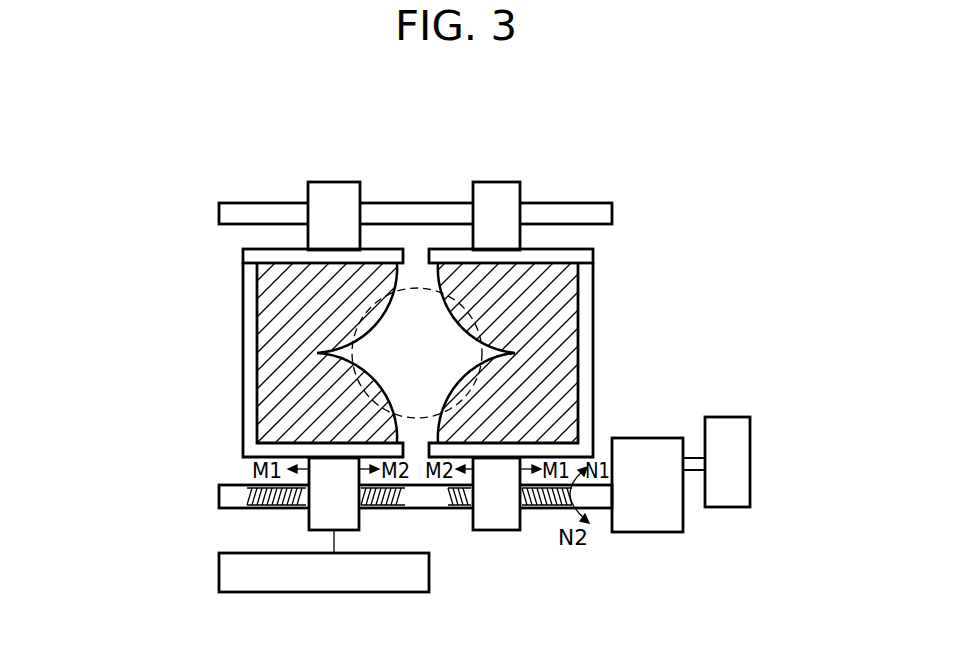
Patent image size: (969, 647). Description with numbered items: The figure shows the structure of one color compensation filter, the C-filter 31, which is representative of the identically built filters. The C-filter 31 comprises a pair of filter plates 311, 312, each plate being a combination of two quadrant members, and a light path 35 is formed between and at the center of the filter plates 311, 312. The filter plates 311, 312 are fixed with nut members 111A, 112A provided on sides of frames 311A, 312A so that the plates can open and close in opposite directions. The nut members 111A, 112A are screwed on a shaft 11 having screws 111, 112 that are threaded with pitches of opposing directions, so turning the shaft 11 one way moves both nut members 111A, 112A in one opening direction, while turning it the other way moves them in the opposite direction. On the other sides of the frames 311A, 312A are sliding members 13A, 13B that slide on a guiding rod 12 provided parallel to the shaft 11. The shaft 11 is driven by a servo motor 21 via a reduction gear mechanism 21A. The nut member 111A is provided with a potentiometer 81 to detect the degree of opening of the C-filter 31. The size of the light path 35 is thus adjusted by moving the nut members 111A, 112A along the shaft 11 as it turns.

The shaft 11 is at (442, 560).
The guiding rod 12 is at (585, 203).
The sliding member 13A is at (333, 181).
The sliding member 13B is at (507, 181).
The servo motor 21 is at (733, 417).
The reduction gear mechanism 21A is at (645, 438).
The C-filter 31 is at (484, 341).
The filter plate 311 is at (633, 344).
The frame 311A is at (593, 250).
The filter plate 312 is at (266, 341).
The frame 312A is at (243, 249).
The light path 35 is at (418, 288).
The potentiometer 81 is at (253, 592).
The screw 111 is at (390, 509).
The nut member 111A is at (309, 518).
The screw 112 is at (537, 509).
The nut member 112A is at (476, 530).